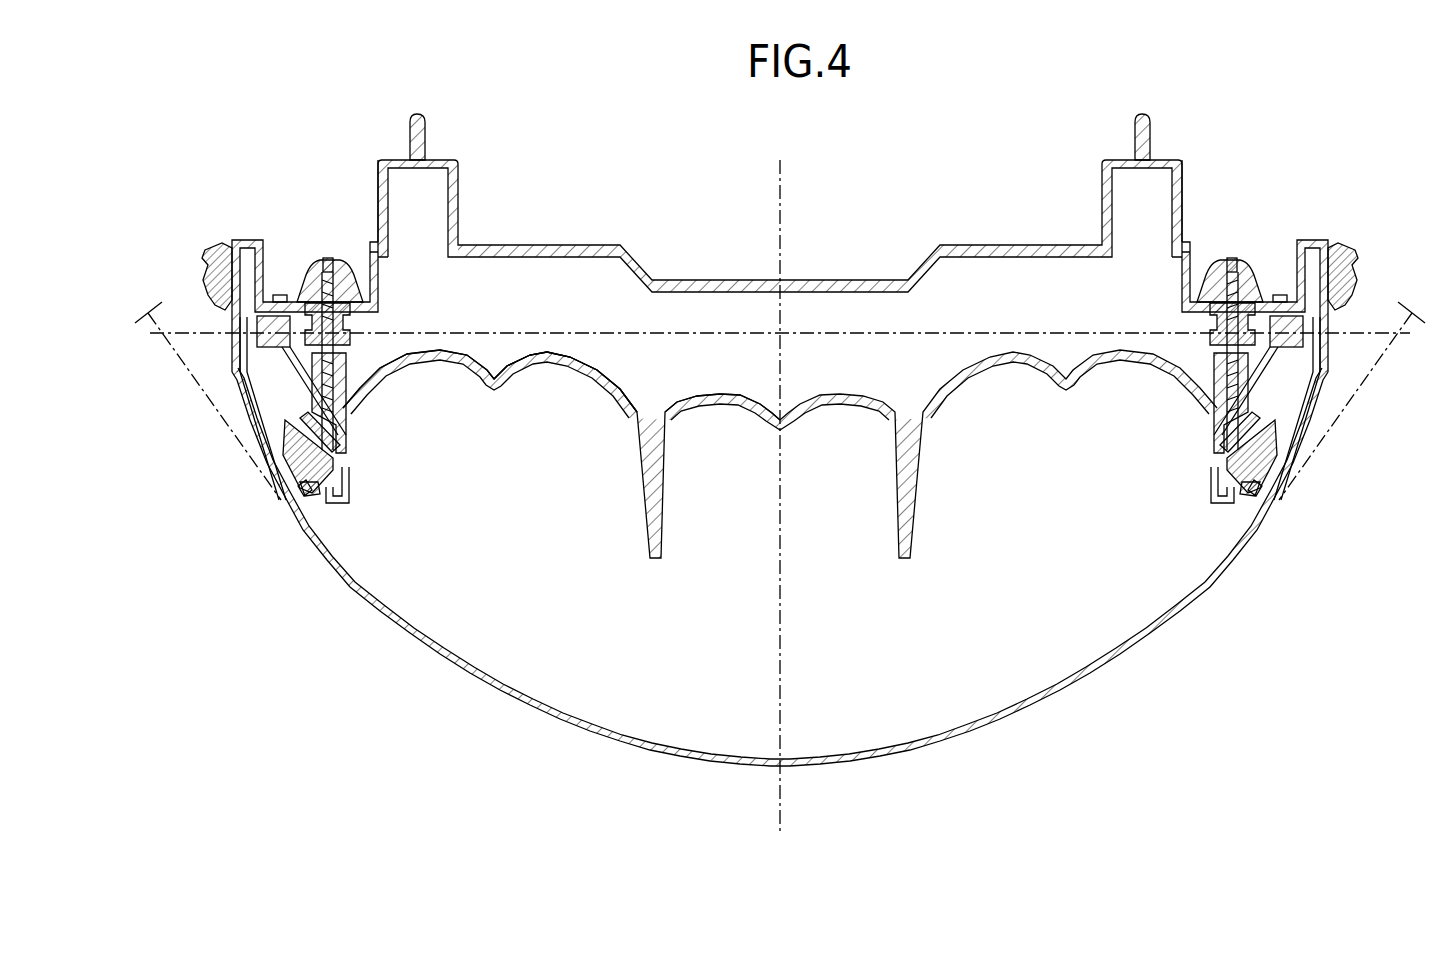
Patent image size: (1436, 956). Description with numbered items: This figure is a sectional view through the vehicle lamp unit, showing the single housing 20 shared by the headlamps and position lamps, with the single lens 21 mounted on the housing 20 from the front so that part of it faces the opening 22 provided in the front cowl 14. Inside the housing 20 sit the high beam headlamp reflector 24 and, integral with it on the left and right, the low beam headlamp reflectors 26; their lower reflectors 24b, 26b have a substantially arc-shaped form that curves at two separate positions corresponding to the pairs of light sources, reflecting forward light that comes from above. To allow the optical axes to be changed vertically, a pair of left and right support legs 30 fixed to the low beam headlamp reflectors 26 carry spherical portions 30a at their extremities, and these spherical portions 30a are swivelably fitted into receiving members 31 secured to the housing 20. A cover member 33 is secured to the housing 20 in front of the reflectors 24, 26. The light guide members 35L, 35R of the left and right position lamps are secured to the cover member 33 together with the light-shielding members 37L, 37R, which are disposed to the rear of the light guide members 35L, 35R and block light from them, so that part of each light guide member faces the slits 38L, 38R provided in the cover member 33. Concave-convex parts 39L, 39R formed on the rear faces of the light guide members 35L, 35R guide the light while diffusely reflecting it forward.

The front cowl 14 is at (1368, 390).
The housing 20 is at (742, 280).
The lens 21 is at (888, 760).
The opening 22 is at (1285, 507).
The high beam headlamp reflector 24 is at (780, 416).
The lower reflector 24b is at (725, 393).
The low beam headlamp reflector 26 is at (528, 347).
The lower reflector 26b is at (553, 353).
The support leg 30 is at (333, 353).
The spherical portion 30a is at (350, 325).
The receiving member 31 is at (287, 300).
The cover member 33 is at (1210, 490).
The light guide member 35L is at (1254, 498).
The light guide member 35R is at (304, 490).
The light-shielding member 37L is at (1243, 447).
The light-shielding member 37R is at (328, 445).
The slit 38L is at (1256, 472).
The slit 38R is at (313, 492).
The concave-convex part 39L is at (1232, 463).
The concave-convex part 39R is at (292, 444).